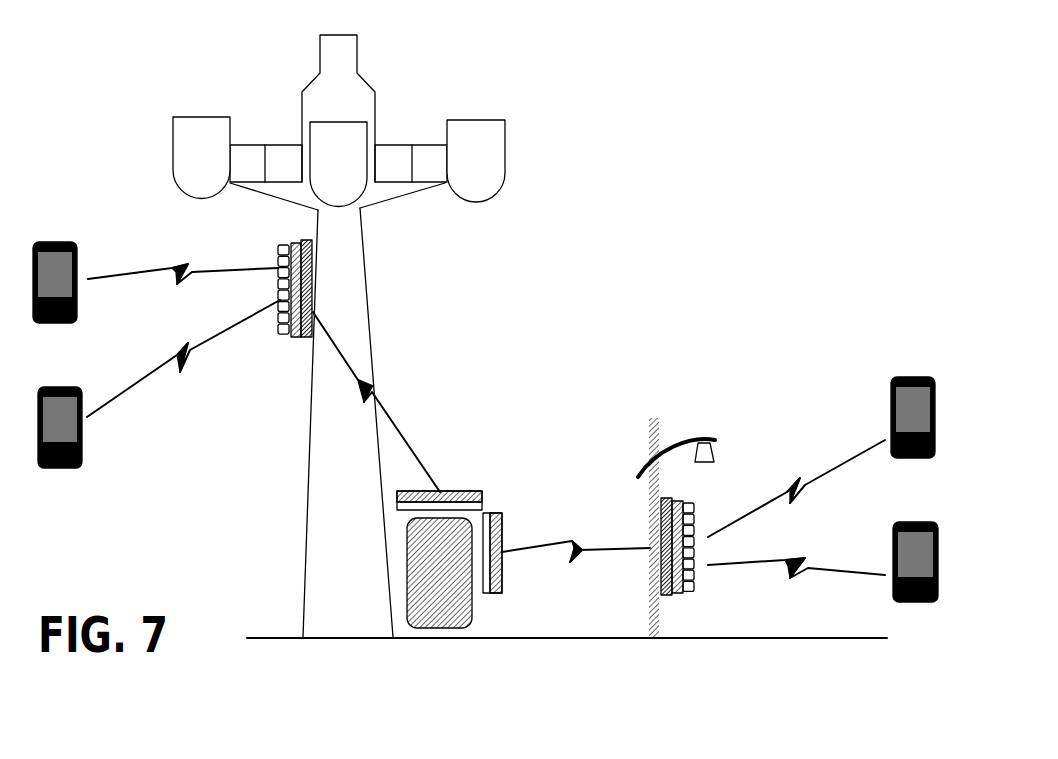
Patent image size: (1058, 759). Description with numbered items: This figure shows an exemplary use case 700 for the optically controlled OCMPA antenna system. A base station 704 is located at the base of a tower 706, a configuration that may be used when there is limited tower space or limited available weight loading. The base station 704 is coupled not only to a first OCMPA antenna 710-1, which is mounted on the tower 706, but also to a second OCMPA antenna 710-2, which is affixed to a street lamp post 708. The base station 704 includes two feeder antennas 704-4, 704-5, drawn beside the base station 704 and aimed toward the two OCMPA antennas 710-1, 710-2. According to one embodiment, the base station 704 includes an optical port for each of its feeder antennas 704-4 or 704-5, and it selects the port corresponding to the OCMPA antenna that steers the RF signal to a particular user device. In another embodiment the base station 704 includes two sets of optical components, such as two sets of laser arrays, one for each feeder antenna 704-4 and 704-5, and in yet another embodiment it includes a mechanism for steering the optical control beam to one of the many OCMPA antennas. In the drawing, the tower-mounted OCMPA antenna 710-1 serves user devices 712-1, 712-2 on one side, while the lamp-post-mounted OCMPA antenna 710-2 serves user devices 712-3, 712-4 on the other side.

The wireless communication environment 700 is at (808, 75).
The base station 704 is at (438, 630).
The feeder antenna 704-4 is at (458, 490).
The feeder antenna 704-5 is at (500, 512).
The tower 706 is at (342, 62).
The street light pole 708 is at (653, 417).
The OCMPA antenna 710-1 is at (293, 337).
The OCMPA antenna 710-2 is at (675, 593).
The user device 712-1 is at (80, 349).
The user device 712-2 is at (88, 494).
The user device 712-3 is at (942, 482).
The user device 712-4 is at (945, 627).